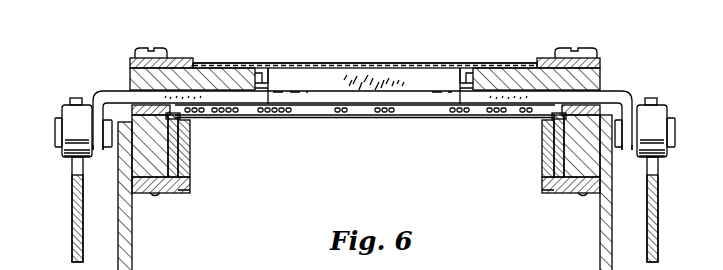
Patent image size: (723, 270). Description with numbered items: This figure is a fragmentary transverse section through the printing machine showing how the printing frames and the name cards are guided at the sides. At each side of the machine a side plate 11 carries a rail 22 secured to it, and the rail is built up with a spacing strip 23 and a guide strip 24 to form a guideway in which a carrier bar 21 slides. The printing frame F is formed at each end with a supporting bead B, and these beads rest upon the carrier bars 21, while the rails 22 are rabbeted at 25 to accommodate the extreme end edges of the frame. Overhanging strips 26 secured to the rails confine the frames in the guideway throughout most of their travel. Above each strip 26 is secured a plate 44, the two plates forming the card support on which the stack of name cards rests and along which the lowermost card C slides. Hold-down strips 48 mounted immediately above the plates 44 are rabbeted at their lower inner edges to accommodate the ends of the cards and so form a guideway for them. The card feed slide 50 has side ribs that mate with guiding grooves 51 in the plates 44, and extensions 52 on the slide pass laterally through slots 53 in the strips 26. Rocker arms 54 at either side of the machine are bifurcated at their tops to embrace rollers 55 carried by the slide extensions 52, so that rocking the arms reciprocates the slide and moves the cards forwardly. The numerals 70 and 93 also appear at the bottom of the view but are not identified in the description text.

The side plate 11 is at (133, 262).
The carrier bar 21 is at (183, 150).
The rail 22 is at (153, 193).
The spacing strip 23 is at (173, 193).
The guide strip 24 is at (190, 170).
The rabbet 25 is at (142, 136).
The overhanging strip 26 is at (220, 68).
The card support plate 44 is at (148, 78).
The hold-down strip 48 is at (130, 58).
The card feed slide 50 is at (403, 78).
The guiding groove 51 is at (282, 67).
The slide extension 52 is at (616, 97).
The slot 53 is at (612, 91).
The rocker arm 54 is at (72, 198).
The roller 55 is at (72, 117).
The base member 70 is at (459, 263).
The support 93 is at (286, 263).
The supporting bead B is at (186, 128).
The name card C is at (343, 63).
The printing frame F is at (336, 112).